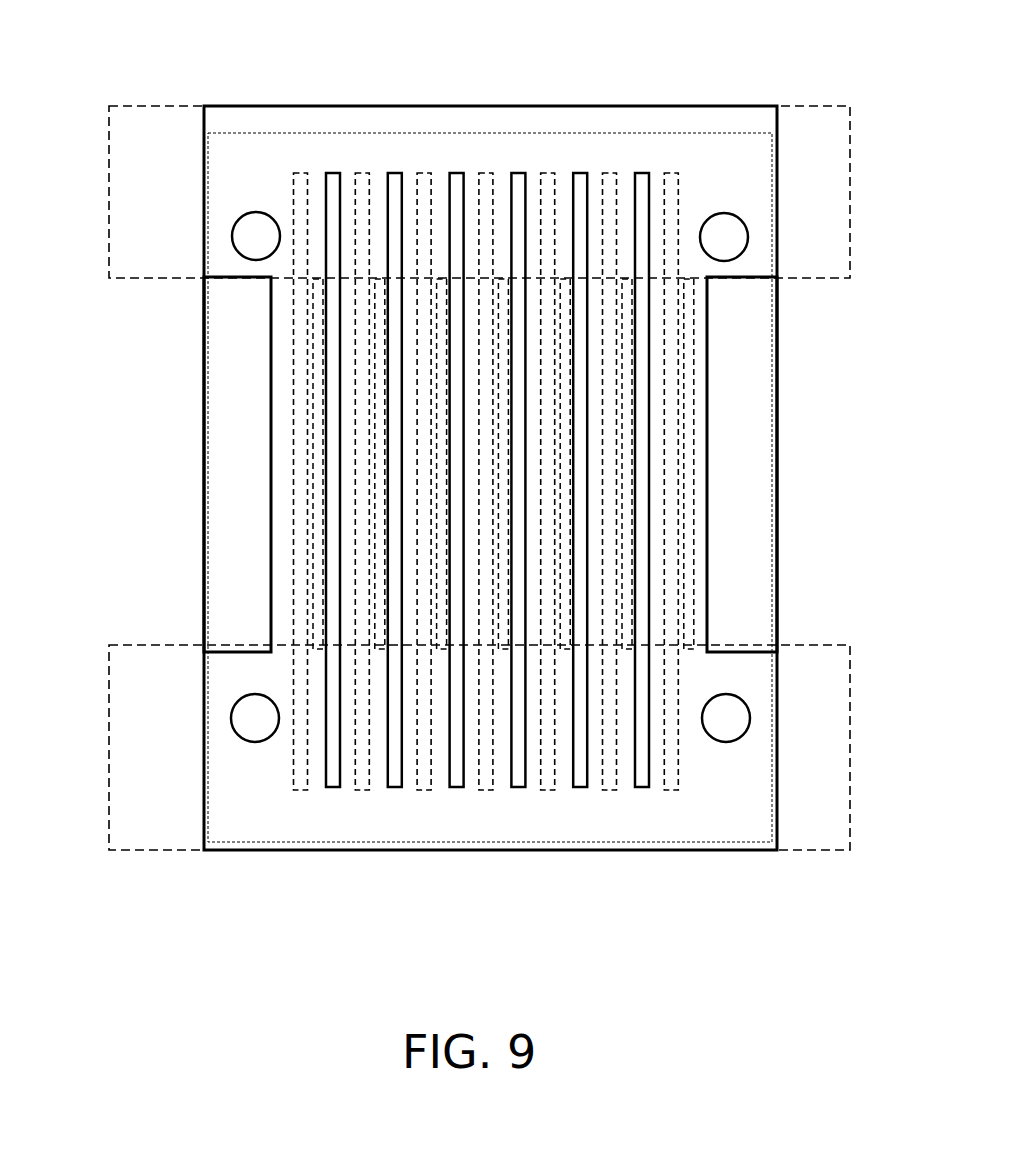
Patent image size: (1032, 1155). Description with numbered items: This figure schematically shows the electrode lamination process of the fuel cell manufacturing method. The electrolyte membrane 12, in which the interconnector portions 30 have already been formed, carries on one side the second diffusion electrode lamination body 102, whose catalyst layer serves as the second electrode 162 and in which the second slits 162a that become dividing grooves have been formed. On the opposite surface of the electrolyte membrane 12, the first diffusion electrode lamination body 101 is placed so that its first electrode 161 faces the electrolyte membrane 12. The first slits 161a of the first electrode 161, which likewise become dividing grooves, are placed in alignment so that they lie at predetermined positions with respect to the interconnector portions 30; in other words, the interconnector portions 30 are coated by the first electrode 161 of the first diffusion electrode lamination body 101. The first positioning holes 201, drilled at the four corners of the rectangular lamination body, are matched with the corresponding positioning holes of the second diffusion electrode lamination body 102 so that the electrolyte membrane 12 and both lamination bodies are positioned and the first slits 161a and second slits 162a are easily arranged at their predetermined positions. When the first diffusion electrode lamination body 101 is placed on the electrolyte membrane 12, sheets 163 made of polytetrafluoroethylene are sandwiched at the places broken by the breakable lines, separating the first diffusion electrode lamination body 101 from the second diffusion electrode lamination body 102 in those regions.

The first diffusion electrode lamination body 101 is at (262, 125).
The first electrode 161 is at (490, 478).
The second diffusion electrode lamination body 102 is at (245, 614).
The second electrode 162 is at (237, 464).
The first slits 161a is at (643, 775).
The second slits 162a is at (674, 185).
The sheets 163 is at (815, 120).
The first positioning holes 201 is at (255, 236).
The electrolyte membrane 12 is at (742, 388).
The interconnector portions 30 is at (688, 642).